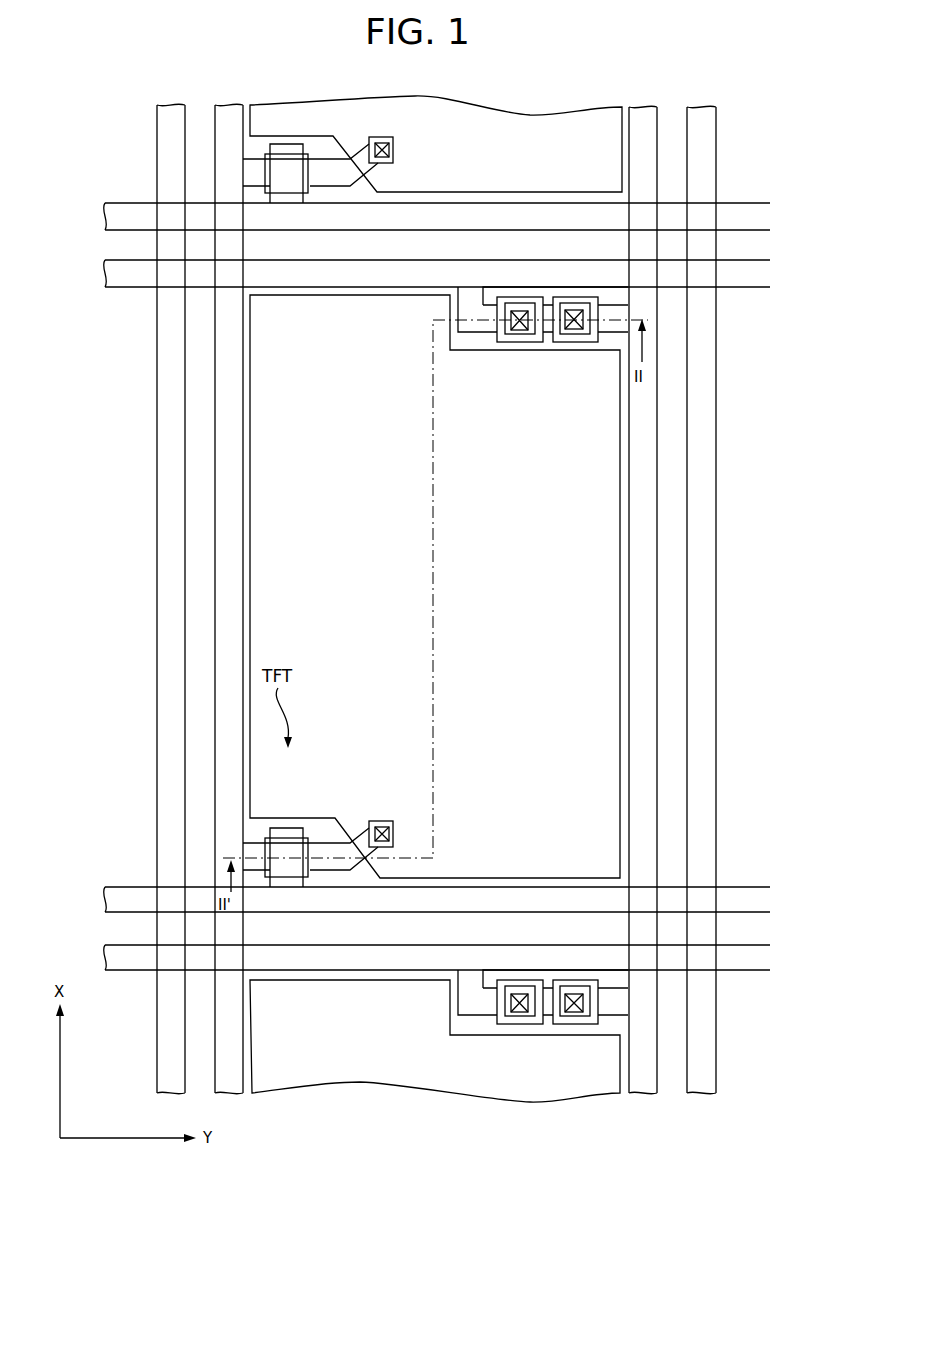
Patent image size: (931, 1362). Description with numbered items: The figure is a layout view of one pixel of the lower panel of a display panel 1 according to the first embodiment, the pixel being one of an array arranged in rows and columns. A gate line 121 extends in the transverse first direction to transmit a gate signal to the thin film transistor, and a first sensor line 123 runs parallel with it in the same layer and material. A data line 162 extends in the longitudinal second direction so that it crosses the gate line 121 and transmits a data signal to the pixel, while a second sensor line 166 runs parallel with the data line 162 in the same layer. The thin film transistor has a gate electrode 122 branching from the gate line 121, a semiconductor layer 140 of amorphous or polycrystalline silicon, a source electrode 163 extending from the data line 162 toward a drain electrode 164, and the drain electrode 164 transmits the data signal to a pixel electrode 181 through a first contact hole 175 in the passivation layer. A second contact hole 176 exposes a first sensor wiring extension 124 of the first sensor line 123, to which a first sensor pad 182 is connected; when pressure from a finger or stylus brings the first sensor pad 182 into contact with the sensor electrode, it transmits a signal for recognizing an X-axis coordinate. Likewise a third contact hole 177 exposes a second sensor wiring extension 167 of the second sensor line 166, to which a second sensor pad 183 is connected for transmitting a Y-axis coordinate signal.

The display panel 1 is at (412, 1106).
The gate line 121 is at (130, 886).
The gate electrode 122 is at (300, 828).
The first sensor line 123 is at (130, 273).
The first sensor wiring extension 124 is at (478, 335).
The semiconductor layer 140 is at (284, 838).
The data line 162 is at (208, 426).
The source electrode 163 is at (265, 837).
The drain electrode 164 is at (325, 843).
The second sensor line 166 is at (659, 395).
The second sensor wiring extension 167 is at (600, 302).
The first contact hole 175 is at (386, 821).
The second contact hole 176 is at (521, 332).
The third contact hole 177 is at (576, 331).
The pixel electrode 181 is at (632, 492).
The first sensor pad 182 is at (508, 342).
The second sensor pad 183 is at (590, 342).